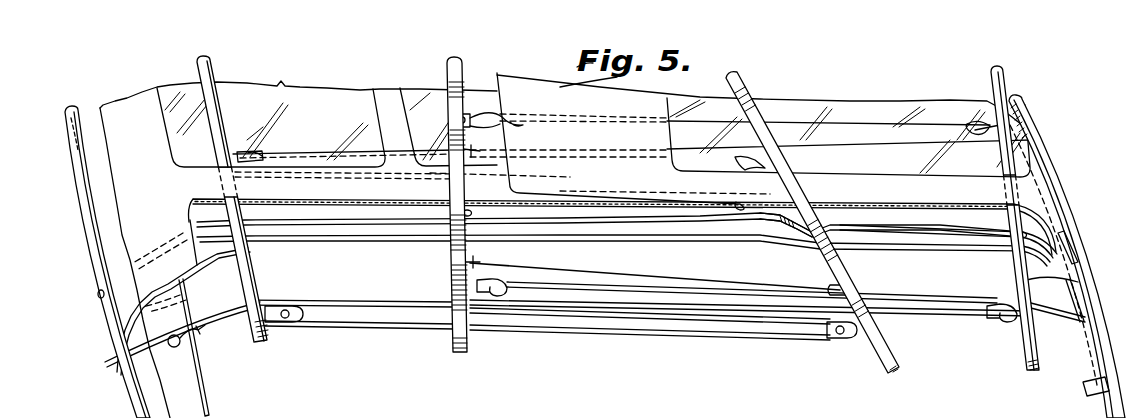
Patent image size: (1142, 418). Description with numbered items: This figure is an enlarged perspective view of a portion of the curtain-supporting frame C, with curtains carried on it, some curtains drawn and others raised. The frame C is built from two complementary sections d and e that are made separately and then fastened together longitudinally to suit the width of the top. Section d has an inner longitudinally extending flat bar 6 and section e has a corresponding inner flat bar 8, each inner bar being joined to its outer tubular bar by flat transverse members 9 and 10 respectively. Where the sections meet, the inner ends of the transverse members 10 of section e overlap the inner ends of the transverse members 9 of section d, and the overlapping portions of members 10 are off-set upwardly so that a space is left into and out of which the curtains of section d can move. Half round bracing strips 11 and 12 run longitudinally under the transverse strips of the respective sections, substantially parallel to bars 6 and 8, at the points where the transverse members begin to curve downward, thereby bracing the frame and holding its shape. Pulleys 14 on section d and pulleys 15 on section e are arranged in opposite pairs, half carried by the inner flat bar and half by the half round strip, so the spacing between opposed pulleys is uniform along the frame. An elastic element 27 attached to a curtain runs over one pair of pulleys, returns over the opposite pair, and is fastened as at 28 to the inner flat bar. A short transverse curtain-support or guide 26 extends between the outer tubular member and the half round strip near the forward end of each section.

The curtain-supporting frame C is at (95, 240).
The inner longitudinally extending flat bar 6 is at (899, 366).
The inner longitudinally extending flat bar 8 is at (455, 350).
The flat transverse member 9 is at (310, 228).
The flat transverse member 10 is at (777, 218).
The half round bracing strip 11 is at (257, 343).
The half round bracing strip 12 is at (1030, 370).
The pulleys 14 is at (272, 324).
The pulleys 15 is at (497, 282).
The transverse curtain-support or guide 26 is at (203, 280).
The elastic element 27 is at (517, 300).
The attachment point of elastic element 28 is at (845, 289).
The frame section d is at (386, 230).
The frame section e is at (965, 236).